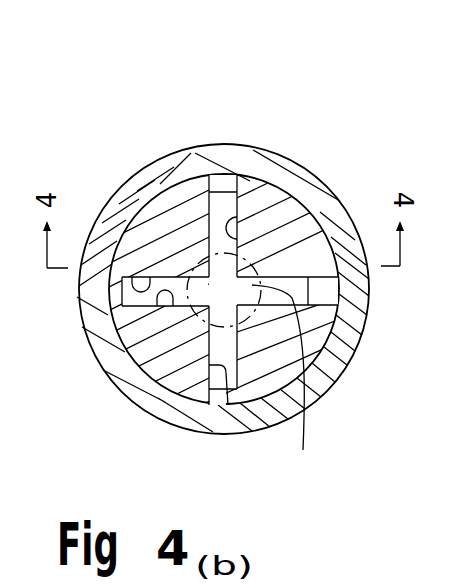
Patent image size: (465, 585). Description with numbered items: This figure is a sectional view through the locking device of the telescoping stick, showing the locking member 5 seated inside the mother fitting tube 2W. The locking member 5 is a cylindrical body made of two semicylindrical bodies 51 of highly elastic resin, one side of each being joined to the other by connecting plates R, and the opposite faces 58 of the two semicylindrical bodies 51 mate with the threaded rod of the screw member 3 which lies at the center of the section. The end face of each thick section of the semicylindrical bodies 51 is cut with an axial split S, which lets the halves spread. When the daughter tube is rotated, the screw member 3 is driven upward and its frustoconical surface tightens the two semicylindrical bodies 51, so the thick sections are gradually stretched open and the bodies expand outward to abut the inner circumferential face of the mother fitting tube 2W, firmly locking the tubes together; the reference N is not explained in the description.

The mother fitting tube 2W is at (230, 153).
The semicylindrical bodies 51 is at (253, 178).
The locking member 5 is at (331, 235).
The opposite faces 58 is at (148, 280).
The screw member 3 is at (282, 379).
The axial split S is at (232, 200).
The north pole N is at (323, 338).
The connecting plates R is at (113, 289).